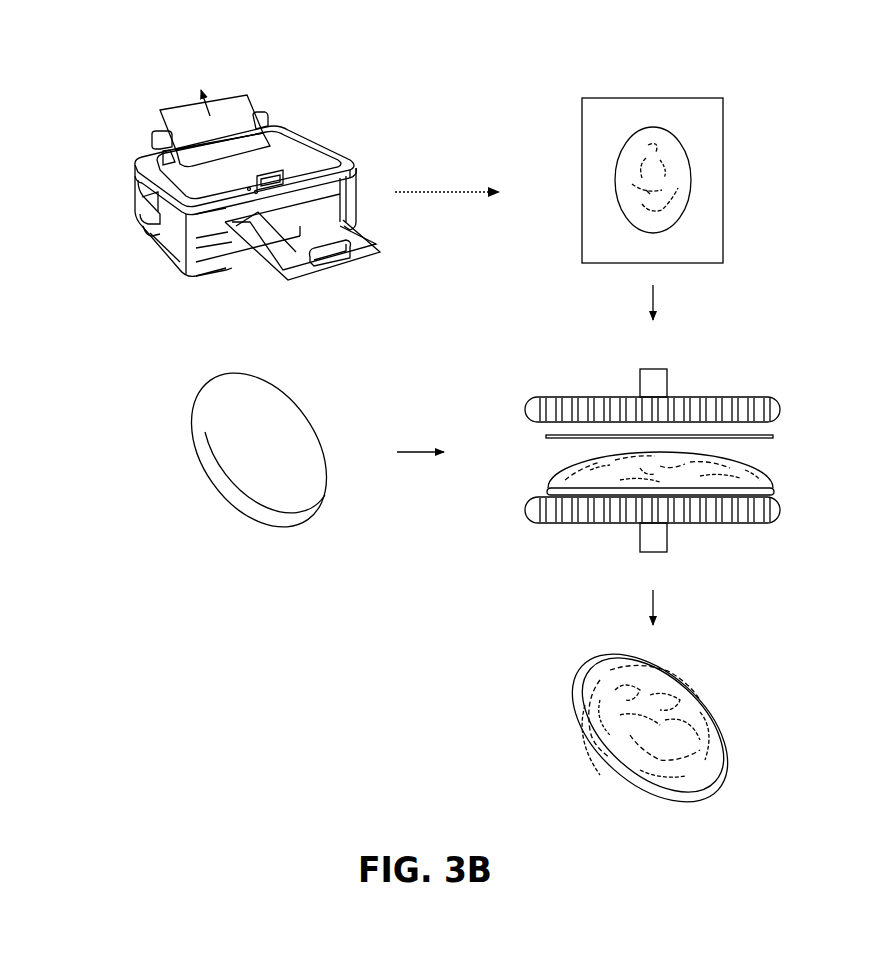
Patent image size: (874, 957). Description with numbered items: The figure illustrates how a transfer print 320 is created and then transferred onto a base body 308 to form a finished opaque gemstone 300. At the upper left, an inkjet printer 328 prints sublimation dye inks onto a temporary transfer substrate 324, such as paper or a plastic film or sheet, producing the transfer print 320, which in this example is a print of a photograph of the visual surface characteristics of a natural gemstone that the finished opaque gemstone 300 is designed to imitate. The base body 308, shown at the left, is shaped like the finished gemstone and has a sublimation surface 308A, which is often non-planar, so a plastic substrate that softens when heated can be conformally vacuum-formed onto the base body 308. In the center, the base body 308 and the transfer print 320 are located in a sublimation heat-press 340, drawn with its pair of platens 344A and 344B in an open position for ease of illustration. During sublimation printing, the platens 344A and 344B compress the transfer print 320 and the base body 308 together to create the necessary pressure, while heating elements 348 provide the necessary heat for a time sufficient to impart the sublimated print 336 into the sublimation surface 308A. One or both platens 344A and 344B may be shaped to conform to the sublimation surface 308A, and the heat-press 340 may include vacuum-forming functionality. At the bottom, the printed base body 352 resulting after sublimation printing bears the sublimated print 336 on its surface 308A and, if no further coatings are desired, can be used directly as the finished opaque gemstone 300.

The finished opaque gemstone 300 is at (750, 650).
The base body 308 is at (216, 369).
The sublimation surface 308A is at (262, 486).
The transfer print 320 is at (692, 162).
The temporary transfer substrate 324 is at (602, 160).
The inkjet printer 328 is at (106, 177).
The sublimated print 336 is at (606, 691).
The sublimation heat-press 340 is at (535, 368).
The platen 344A is at (764, 388).
The platen 344B is at (573, 530).
The heating elements 348 is at (726, 394).
The printed base body 352 is at (603, 790).